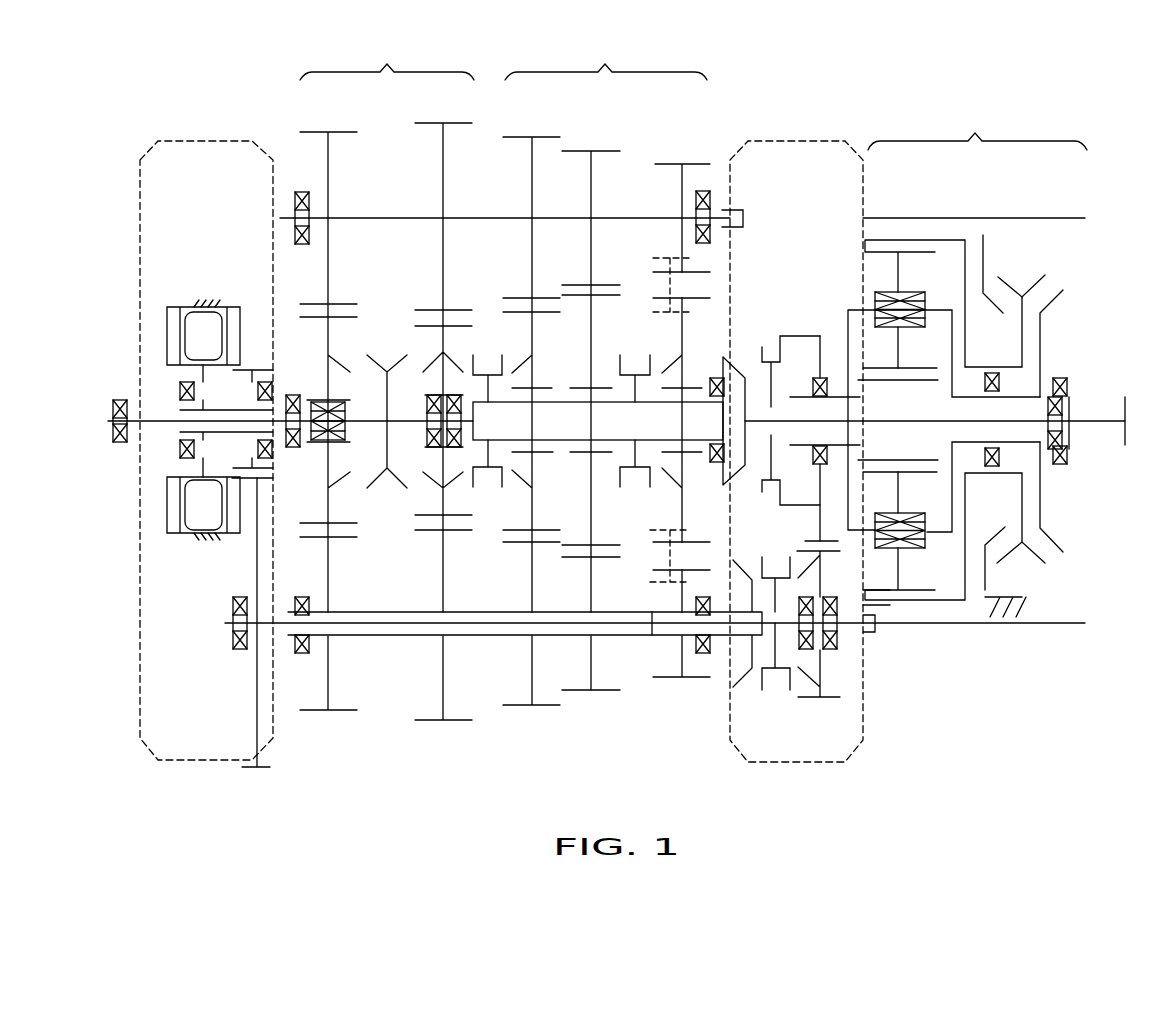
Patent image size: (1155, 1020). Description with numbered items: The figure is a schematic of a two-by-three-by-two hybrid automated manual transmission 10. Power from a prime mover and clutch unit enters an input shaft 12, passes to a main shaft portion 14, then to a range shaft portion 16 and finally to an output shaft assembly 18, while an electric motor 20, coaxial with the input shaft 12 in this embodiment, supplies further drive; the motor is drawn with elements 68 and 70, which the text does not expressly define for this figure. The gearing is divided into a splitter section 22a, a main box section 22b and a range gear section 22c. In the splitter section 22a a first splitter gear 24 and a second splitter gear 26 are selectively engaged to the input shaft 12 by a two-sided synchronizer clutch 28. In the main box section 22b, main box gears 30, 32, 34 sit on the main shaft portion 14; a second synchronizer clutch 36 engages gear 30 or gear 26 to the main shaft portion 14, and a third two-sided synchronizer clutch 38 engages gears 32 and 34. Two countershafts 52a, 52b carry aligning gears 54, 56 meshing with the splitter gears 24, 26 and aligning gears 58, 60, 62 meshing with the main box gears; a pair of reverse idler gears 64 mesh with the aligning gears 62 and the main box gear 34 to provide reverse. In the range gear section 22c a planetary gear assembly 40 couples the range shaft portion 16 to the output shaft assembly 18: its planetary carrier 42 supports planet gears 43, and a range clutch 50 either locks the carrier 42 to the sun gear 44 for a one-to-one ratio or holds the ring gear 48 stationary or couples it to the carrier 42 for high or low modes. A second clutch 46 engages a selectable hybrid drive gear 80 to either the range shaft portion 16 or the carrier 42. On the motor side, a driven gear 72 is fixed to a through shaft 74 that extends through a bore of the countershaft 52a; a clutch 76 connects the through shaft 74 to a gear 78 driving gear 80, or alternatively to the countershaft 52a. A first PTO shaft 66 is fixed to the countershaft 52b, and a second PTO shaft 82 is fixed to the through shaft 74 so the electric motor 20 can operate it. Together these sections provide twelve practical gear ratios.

The hybrid automated manual transmission 10 is at (716, 94).
The input shaft 12 is at (160, 421).
The main shaft portion 14 is at (560, 400).
The range shaft portion 16 is at (957, 420).
The output shaft assembly 18 is at (1100, 421).
The electric motor 20 is at (209, 473).
The splitter section 22a is at (387, 57).
The main box section 22b is at (606, 57).
The range gear section 22c is at (977, 128).
The first splitter gear 24 is at (340, 305).
The second splitter gear 26 is at (453, 323).
The two-sided synchronizer clutch 28 is at (388, 505).
The main box gear 30 is at (540, 298).
The main box gear 32 is at (592, 285).
The main box gear 34 is at (700, 296).
The second synchronizer clutch 36 is at (487, 510).
The third two-sided synchronizer clutch 38 is at (637, 505).
The planetary gear assembly 40 is at (901, 610).
The planetary carrier 42 is at (940, 540).
The planet gears 43 is at (880, 245).
The sun gear 44 is at (905, 375).
The second clutch 46 is at (782, 328).
The ring gear 48 is at (956, 240).
The range clutch 50 is at (1060, 260).
The countershaft 52a is at (365, 640).
The countershaft 52b is at (410, 215).
The aligning gear 54 is at (340, 128).
The aligning gear 56 is at (433, 120).
The aligning gear 58 is at (546, 135).
The aligning gear 60 is at (602, 150).
The aligning gear 62 is at (670, 162).
The reverse idler gears 64 is at (667, 313).
The first PTO shaft 66 is at (1040, 215).
The rotor 68 is at (222, 407).
The stator 70 is at (266, 375).
The driven gear 72 is at (262, 767).
The through shaft 74 is at (657, 627).
The clutch 76 is at (773, 705).
The gear 78 is at (806, 700).
The selectable hybrid drive gear 80 is at (822, 335).
The second PTO shaft 82 is at (1055, 626).